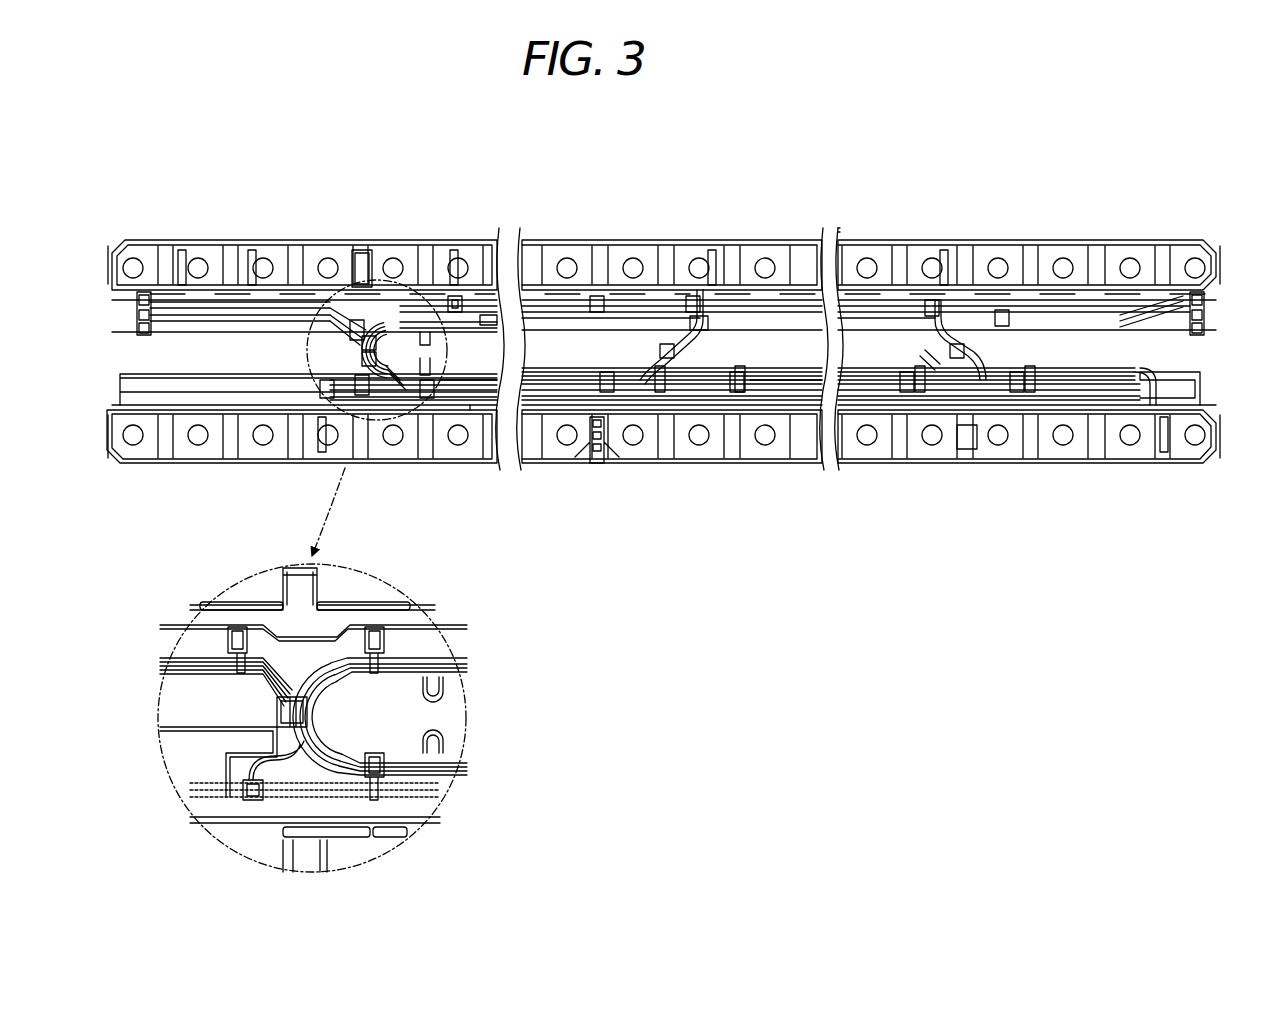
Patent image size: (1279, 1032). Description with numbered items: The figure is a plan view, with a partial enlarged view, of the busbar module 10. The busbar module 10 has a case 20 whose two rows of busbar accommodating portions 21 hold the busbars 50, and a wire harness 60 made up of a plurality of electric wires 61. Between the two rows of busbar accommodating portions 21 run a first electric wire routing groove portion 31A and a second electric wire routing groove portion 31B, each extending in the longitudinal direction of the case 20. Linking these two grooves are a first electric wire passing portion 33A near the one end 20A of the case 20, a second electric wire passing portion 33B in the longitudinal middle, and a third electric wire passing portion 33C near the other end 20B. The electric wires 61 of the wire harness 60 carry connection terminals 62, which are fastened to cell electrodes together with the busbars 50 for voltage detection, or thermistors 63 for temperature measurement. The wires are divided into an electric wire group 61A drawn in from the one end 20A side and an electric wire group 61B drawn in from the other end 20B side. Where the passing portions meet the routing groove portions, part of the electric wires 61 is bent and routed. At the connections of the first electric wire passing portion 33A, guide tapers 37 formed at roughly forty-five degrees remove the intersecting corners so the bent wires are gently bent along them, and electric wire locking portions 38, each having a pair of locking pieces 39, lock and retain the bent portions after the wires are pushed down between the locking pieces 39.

The busbar module 10 is at (913, 198).
The case 20 is at (1014, 232).
The one end (first end) of the case 20A is at (115, 352).
The other end (second end) of the case 20B is at (1210, 368).
The busbar accommodating portion 21 is at (202, 238).
The first electric wire routing groove portion 31A is at (576, 465).
The second electric wire routing groove portion 31B is at (497, 305).
The first electric wire passing portion 33A is at (336, 352).
The second electric wire passing portion 33B is at (682, 400).
The third electric wire passing portion 33C is at (985, 465).
The guide taper 37 is at (333, 238).
The electric wire locking portion 38 is at (313, 238).
The locking piece 39 is at (297, 590).
The busbar 50 is at (263, 238).
The wire harness 60 is at (452, 465).
The electric wire 61 is at (228, 238).
The electric wire group 61A is at (450, 465).
The electric wire group 61B is at (790, 465).
The connection terminal 62 is at (186, 238).
The thermistor 63 is at (137, 322).